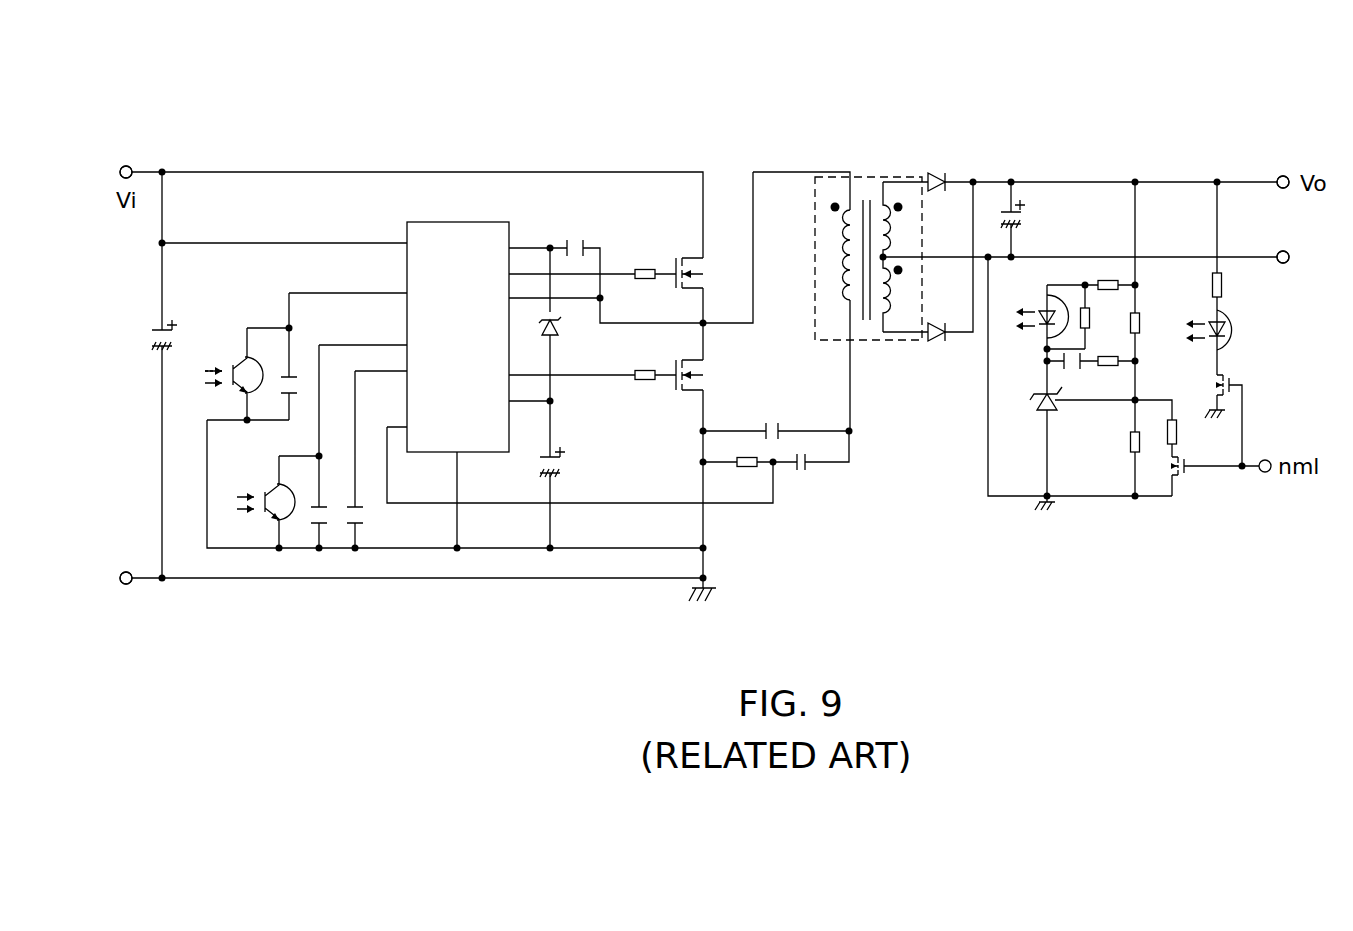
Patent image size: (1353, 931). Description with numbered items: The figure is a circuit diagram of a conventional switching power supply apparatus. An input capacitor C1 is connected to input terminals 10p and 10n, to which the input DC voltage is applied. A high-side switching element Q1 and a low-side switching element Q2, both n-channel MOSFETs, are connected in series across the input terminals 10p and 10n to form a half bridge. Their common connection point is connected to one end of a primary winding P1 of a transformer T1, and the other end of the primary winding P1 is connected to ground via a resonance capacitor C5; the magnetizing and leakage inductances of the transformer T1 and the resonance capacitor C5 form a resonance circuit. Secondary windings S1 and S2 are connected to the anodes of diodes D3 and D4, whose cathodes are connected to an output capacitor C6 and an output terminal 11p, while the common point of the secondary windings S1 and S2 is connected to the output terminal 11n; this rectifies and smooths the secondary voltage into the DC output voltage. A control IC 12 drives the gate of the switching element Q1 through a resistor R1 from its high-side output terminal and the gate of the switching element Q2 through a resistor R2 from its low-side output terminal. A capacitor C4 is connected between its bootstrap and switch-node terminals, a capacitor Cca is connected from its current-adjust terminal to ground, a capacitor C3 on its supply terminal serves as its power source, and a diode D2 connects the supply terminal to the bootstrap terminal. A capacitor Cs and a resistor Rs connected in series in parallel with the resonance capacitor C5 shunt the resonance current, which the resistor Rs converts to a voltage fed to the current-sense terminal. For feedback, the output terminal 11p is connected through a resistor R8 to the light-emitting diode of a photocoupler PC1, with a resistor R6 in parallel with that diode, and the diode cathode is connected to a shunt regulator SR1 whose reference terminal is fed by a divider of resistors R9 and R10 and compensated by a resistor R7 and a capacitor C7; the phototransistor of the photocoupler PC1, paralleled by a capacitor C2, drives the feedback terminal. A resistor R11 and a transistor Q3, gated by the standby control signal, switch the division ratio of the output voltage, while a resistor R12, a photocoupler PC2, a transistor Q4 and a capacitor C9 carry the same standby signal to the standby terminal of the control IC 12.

The input terminal 10p is at (126, 165).
The input terminal 10n is at (126, 571).
The output terminal 11p is at (1283, 175).
The output terminal 11n is at (1283, 250).
The control IC 12 is at (449, 222).
The input capacitor C1 is at (175, 345).
The capacitor C2 is at (332, 502).
The capacitor C3 is at (568, 463).
The capacitor C4 is at (575, 235).
The resonance capacitor C5 is at (771, 419).
The output capacitor C6 is at (1030, 216).
The capacitor C7 is at (1082, 375).
The capacitor C9 is at (301, 375).
The capacitor Cca is at (375, 526).
The capacitor Cs is at (815, 451).
The resistor Rs is at (743, 450).
The resistor R1 is at (646, 262).
The resistor R2 is at (646, 363).
The resistor R6 is at (1102, 319).
The resistor R7 is at (1111, 351).
The resistor R8 is at (1109, 273).
The resistor R9 is at (1153, 325).
The resistor R10 is at (1112, 443).
The resistor R11 is at (1197, 432).
The resistor R12 is at (1243, 286).
The diode D2 is at (566, 325).
The diode D3 is at (939, 169).
The diode D4 is at (939, 349).
The high-side switching element Q1 is at (709, 273).
The low-side switching element Q2 is at (709, 375).
The transistor Q3 is at (1195, 458).
The transistor Q4 is at (1241, 377).
The photocoupler PC1 is at (650, 413).
The photocoupler PC2 is at (749, 365).
The shunt regulator SR1 is at (1030, 412).
The transformer T1 is at (870, 245).
The primary winding P1 is at (834, 252).
The secondary winding S1 is at (904, 219).
The secondary winding S2 is at (904, 294).